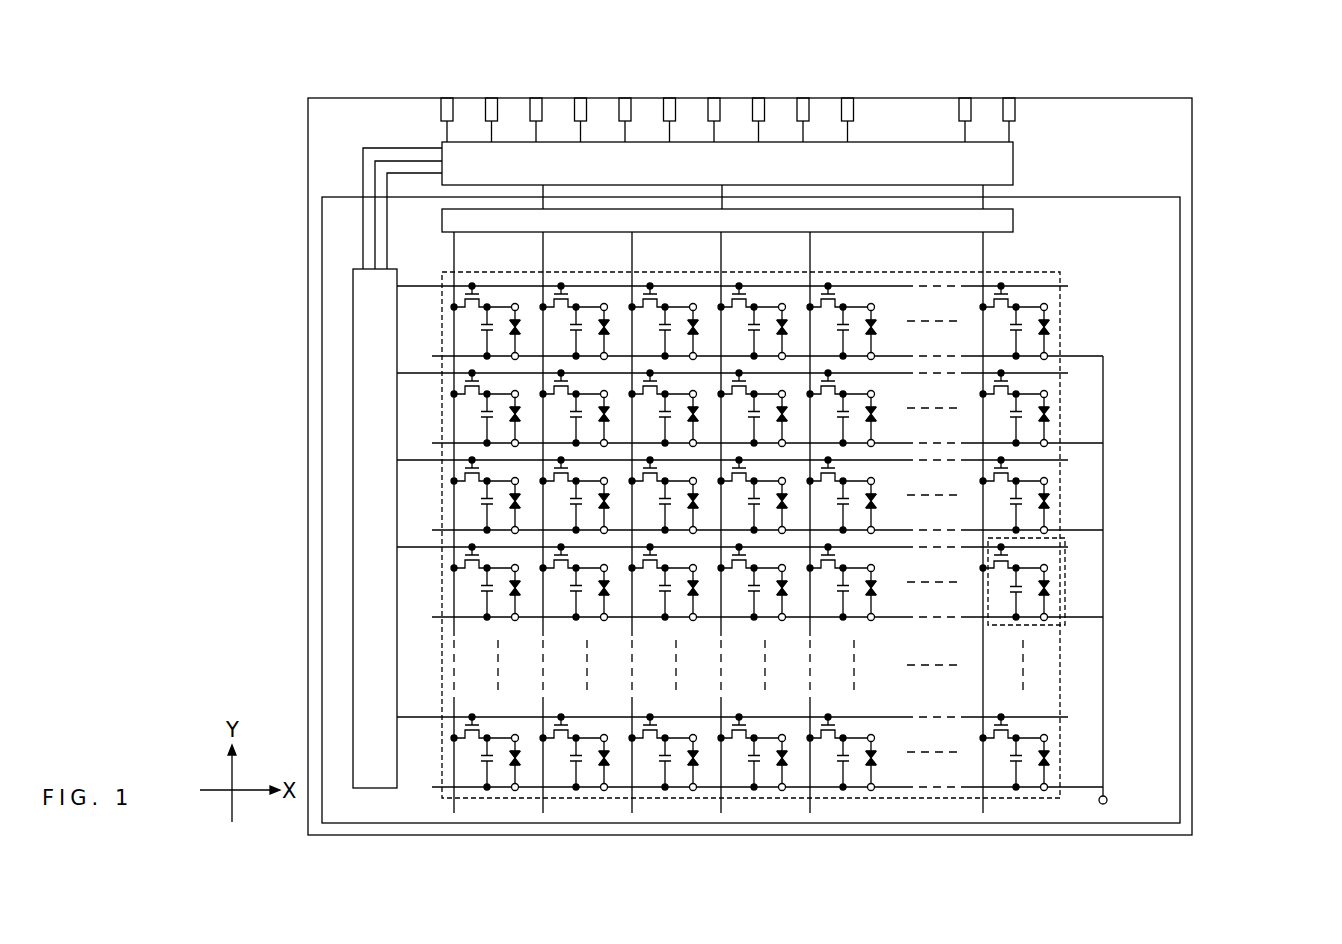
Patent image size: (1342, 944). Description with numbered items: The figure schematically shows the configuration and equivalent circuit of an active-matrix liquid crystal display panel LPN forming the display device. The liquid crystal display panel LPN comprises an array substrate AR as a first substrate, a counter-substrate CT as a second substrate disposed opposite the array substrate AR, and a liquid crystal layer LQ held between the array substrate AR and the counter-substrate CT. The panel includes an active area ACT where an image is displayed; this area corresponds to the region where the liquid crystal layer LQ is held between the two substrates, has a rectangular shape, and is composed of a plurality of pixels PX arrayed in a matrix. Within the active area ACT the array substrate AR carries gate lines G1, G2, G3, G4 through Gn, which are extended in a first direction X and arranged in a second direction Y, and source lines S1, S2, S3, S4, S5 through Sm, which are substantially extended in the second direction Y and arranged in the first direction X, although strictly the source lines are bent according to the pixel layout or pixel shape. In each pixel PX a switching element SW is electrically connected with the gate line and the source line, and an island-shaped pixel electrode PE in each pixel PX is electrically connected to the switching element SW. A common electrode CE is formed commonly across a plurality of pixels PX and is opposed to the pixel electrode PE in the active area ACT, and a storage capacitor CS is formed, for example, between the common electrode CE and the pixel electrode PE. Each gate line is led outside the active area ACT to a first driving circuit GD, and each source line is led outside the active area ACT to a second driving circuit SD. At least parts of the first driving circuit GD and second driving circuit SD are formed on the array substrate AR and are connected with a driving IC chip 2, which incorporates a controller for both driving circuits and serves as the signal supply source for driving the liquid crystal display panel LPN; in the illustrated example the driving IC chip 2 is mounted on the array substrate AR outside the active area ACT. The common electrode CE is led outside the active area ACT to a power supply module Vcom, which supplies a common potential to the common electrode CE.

The liquid crystal display panel LPN is at (1236, 105).
The array substrate AR is at (1168, 152).
The driving IC chip 2 is at (1013, 143).
The second driving circuit SD is at (1015, 221).
The counter-substrate CT is at (1181, 252).
The first driving circuit GD is at (353, 650).
The gate line G1 is at (420, 284).
The gate line G2 is at (420, 371).
The gate line G3 is at (420, 458).
The gate line G4 is at (420, 545).
The gate line Gn is at (418, 715).
The source line S1 is at (457, 252).
The source line S2 is at (546, 252).
The source line S3 is at (635, 252).
The source line S4 is at (724, 252).
The source line S5 is at (813, 252).
The source line Sm is at (986, 252).
The active area ACT is at (1060, 387).
The pixel PX is at (1028, 589).
The switching element SW is at (981, 562).
The storage capacitor CS is at (1003, 589).
The pixel electrode PE is at (1047, 568).
The liquid crystal layer LQ is at (1049, 589).
The common electrode CE is at (1047, 617).
The power supply module Vcom is at (1107, 798).